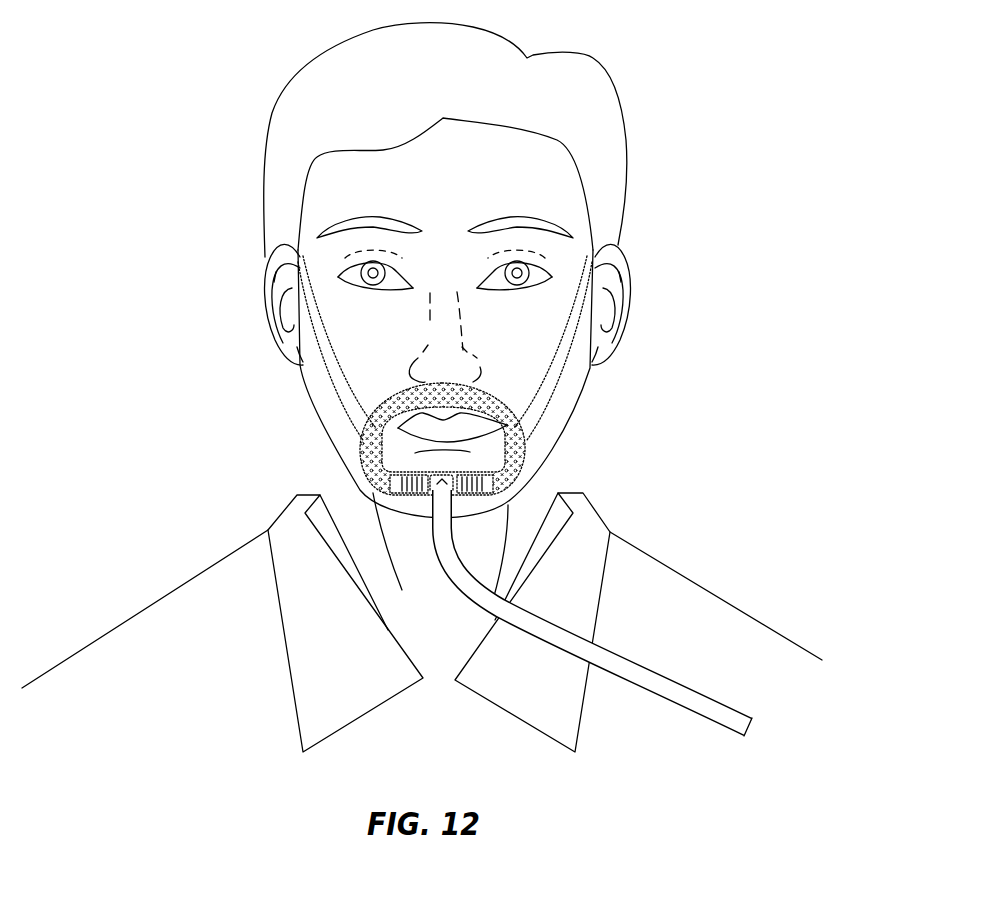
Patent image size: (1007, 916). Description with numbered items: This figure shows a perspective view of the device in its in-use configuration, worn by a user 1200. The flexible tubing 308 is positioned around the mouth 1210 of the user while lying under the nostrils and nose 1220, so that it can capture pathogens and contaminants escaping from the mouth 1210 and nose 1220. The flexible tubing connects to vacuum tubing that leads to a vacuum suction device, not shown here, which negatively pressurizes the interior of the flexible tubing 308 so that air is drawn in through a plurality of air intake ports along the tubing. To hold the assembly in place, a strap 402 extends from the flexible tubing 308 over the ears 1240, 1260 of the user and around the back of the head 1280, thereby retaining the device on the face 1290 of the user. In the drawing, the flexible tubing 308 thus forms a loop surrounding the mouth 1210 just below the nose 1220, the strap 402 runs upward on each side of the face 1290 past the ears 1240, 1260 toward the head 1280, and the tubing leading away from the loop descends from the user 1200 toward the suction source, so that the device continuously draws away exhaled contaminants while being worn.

The head 1280 is at (571, 55).
The face 1290 is at (388, 218).
The ear 1260 is at (268, 283).
The ear 1240 is at (626, 250).
The strap 402 is at (330, 330).
The flexible tubing 308 is at (527, 452).
The nose 1220 is at (463, 352).
The mouth 1210 is at (362, 440).
The user 1200 is at (630, 551).